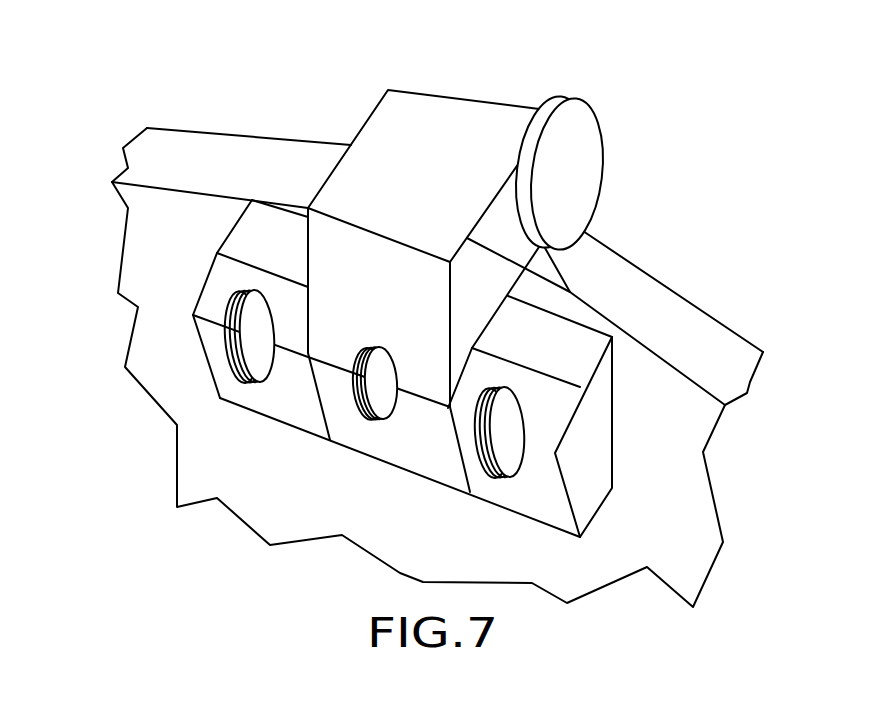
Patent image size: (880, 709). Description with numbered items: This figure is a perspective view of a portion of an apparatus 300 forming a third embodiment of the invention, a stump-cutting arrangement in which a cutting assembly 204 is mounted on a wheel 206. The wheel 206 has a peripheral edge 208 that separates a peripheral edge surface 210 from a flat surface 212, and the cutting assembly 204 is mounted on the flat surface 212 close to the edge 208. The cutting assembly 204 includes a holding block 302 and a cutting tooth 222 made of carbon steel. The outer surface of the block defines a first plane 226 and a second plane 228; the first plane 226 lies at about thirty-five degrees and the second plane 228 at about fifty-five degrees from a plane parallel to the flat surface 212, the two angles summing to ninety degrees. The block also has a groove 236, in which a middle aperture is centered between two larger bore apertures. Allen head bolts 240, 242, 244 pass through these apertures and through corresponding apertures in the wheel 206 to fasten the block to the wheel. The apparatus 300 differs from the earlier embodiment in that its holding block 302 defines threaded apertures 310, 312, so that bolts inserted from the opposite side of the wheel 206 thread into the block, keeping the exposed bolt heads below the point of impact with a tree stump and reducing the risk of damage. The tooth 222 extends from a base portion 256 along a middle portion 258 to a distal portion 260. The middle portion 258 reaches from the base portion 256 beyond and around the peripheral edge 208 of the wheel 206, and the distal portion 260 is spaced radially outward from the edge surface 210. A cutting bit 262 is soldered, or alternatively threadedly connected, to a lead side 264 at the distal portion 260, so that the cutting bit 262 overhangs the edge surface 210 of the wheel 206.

The cutting assembly 204 is at (364, 108).
The wheel 206 is at (688, 302).
The peripheral edge 208 is at (570, 292).
The peripheral edge surface 210 is at (733, 365).
The flat surface 212 is at (680, 480).
The cutting tooth 222 is at (333, 172).
The first plane 226 is at (573, 412).
The second plane 228 is at (578, 517).
The groove 236 is at (463, 458).
The Allen head bolt 240 is at (508, 513).
The Allen head bolt 242 is at (258, 343).
The Allen head bolt 244 is at (382, 373).
The base portion 256 is at (433, 460).
The middle portion 258 is at (382, 283).
The distal portion 260 is at (445, 173).
The cutting bit 262 is at (572, 100).
The lead side 264 is at (513, 278).
The apparatus 300 is at (186, 97).
The holding block 302 is at (207, 345).
The threaded aperture 310 is at (510, 478).
The threaded aperture 312 is at (245, 362).